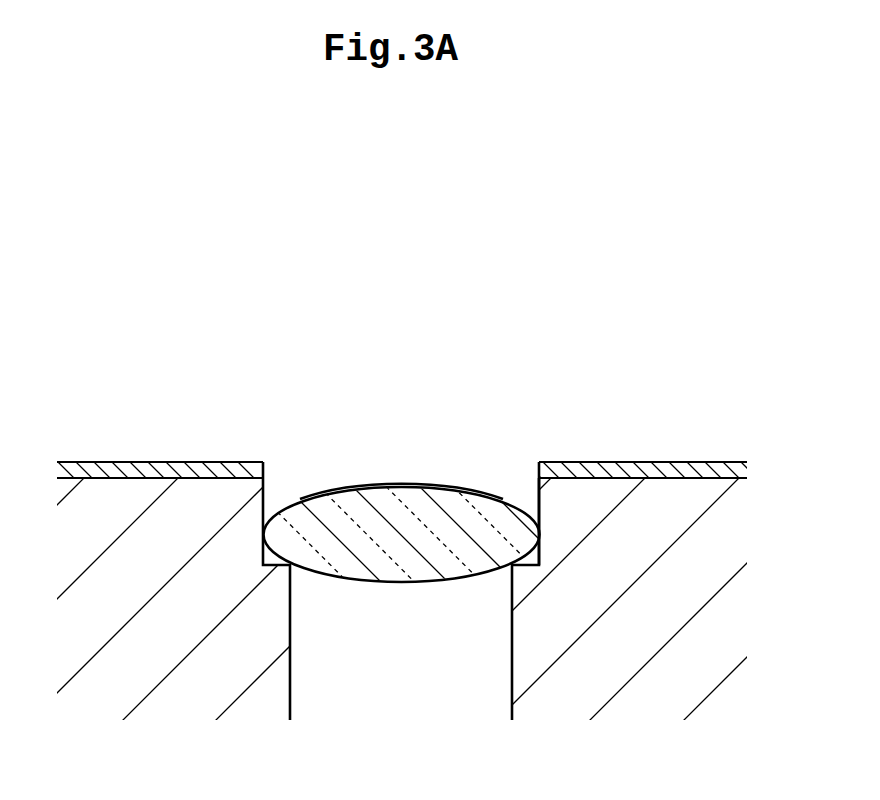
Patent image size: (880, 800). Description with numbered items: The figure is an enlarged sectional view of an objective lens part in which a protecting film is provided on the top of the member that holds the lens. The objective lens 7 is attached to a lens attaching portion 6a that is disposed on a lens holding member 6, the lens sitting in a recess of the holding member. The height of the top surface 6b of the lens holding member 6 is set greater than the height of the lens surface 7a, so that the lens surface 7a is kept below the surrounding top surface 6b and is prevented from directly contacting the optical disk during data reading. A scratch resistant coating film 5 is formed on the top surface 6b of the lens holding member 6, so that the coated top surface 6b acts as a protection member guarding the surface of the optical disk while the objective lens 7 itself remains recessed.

The scratch resistant coating film 5 is at (615, 473).
The lens holding member 6 is at (622, 668).
The lens attaching portion 6a is at (537, 503).
The top surface of the lens holding member 6b is at (690, 480).
The objective lens 7 is at (412, 520).
The lens surface 7a is at (399, 488).